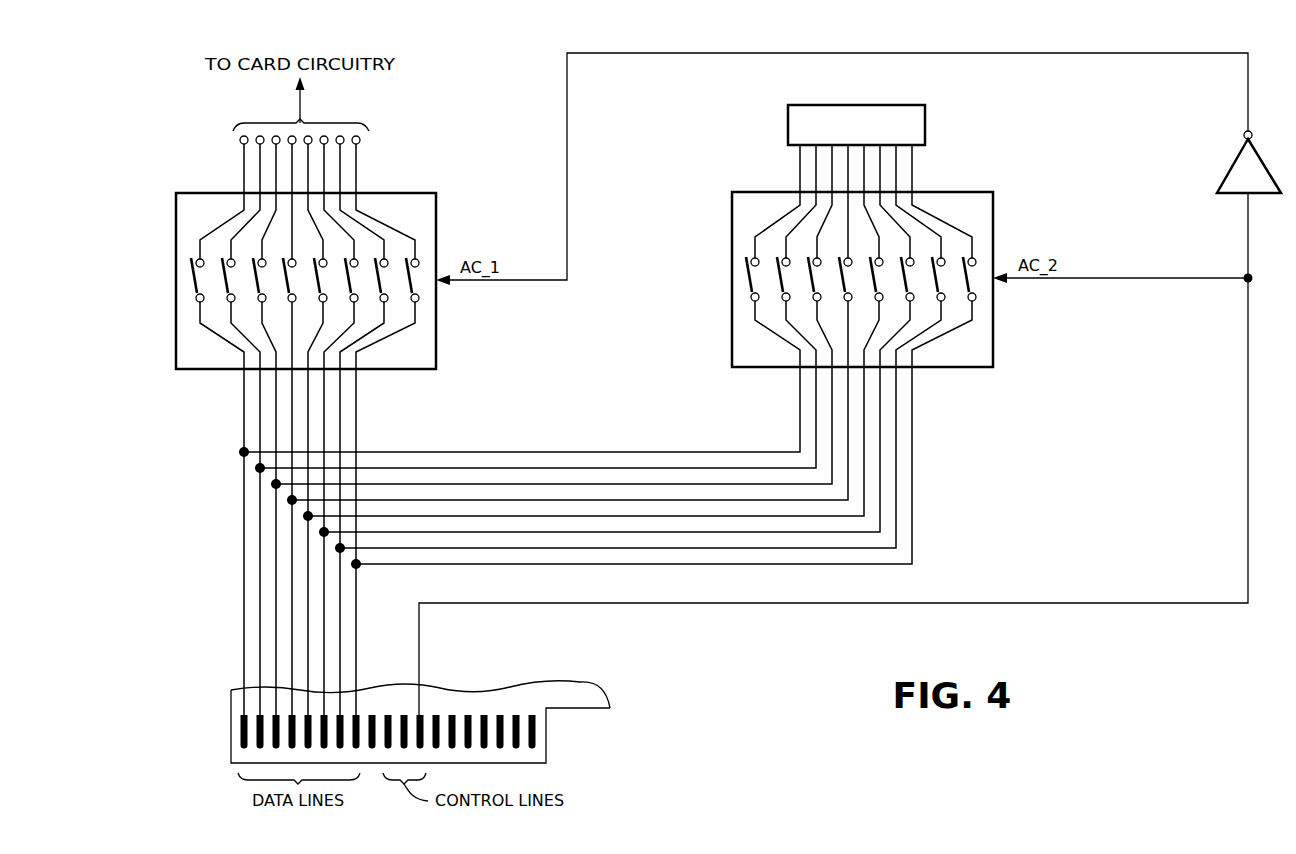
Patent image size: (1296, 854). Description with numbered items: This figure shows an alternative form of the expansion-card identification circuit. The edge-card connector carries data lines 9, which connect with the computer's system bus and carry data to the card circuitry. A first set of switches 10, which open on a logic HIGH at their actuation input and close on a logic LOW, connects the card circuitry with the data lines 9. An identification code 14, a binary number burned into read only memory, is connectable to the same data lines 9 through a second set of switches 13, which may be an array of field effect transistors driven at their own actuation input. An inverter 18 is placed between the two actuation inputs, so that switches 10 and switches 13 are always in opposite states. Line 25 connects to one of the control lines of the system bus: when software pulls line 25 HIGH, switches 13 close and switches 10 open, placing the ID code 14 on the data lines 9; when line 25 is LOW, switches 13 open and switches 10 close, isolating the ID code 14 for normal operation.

The data lines 9 is at (356, 388).
The switches 10 is at (437, 192).
The switches 13 is at (994, 192).
The identification code 14 is at (788, 116).
The inverter 18 is at (1238, 173).
The line 25 is at (1064, 603).